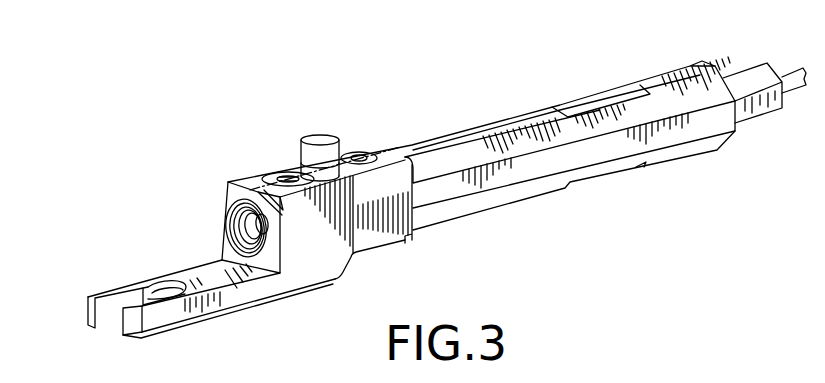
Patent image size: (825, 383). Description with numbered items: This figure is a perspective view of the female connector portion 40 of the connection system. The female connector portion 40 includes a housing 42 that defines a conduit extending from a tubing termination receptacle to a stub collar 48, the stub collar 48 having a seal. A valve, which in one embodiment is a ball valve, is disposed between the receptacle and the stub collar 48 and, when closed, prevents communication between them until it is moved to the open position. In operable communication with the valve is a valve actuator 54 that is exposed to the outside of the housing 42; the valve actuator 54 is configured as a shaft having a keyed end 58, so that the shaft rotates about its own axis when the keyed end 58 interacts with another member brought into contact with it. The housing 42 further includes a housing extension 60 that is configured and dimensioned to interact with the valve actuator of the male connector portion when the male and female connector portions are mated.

The female connector portion 40 is at (420, 120).
The housing 42 is at (493, 138).
The stub collar 48 is at (227, 227).
The valve actuator 54 is at (333, 127).
The keyed end 58 is at (300, 150).
The housing extension 60 is at (210, 272).